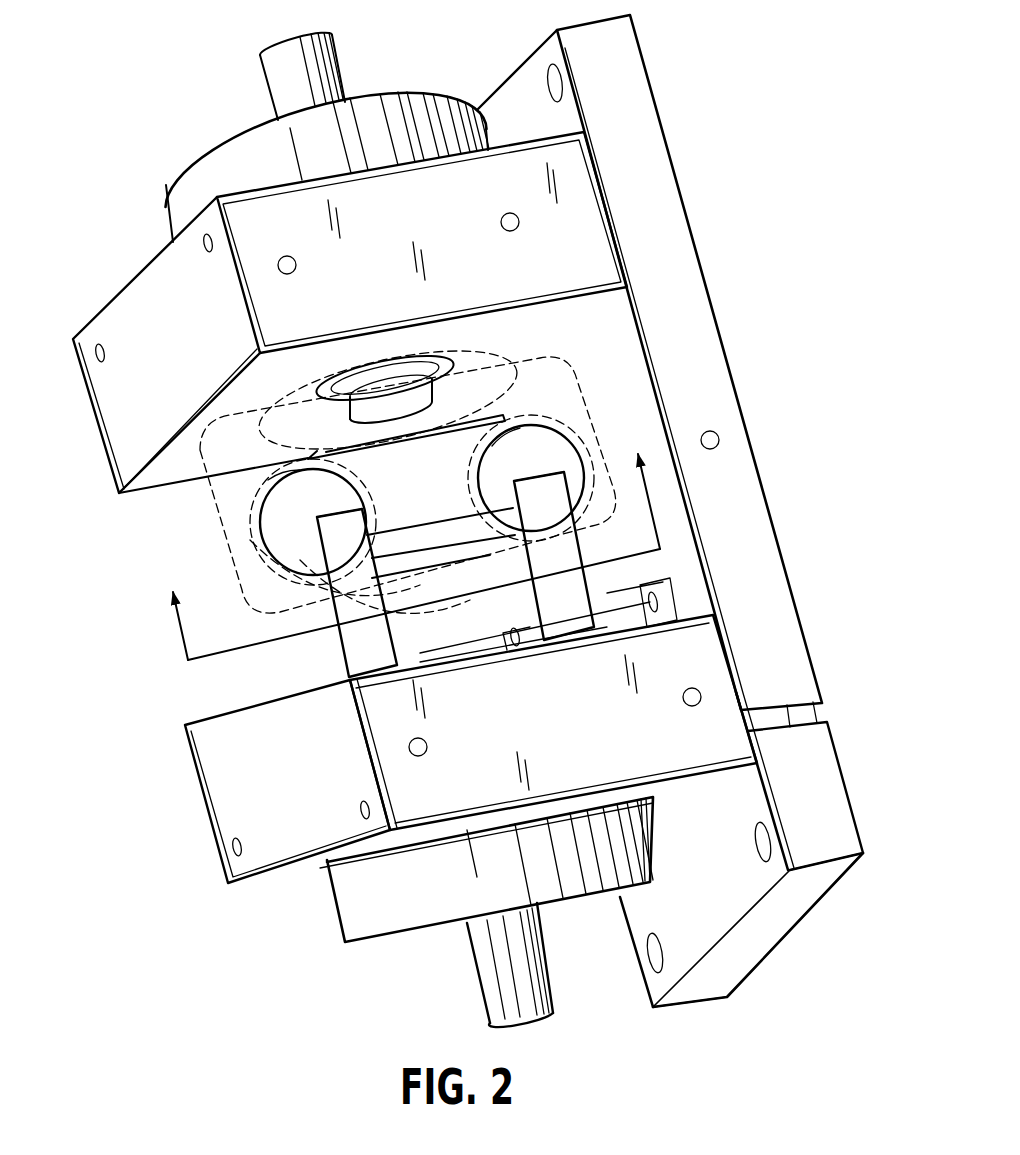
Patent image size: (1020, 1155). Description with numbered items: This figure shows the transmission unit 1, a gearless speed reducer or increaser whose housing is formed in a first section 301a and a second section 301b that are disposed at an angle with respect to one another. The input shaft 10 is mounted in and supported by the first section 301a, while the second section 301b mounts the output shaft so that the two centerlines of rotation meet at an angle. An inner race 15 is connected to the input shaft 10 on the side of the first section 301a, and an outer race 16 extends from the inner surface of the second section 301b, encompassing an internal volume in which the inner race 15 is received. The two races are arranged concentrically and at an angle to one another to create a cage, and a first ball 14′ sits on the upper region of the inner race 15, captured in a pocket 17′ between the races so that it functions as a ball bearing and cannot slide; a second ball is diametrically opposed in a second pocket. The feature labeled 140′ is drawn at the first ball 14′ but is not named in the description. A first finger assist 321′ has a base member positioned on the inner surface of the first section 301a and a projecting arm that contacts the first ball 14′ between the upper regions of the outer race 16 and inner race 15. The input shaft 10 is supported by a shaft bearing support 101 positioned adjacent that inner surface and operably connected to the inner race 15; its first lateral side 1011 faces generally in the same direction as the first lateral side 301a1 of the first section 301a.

The transmission unit 1 is at (148, 731).
The input shaft 10 is at (523, 1000).
The shaft bearing support 101 is at (533, 880).
The first lateral side 1011 is at (540, 836).
The first ball 14′ is at (267, 533).
The first mounting hole 140′ is at (314, 518).
The inner race 15 is at (433, 478).
The outer race 16 is at (642, 378).
The first pocket 17′ is at (293, 488).
The first section 301a is at (250, 817).
The first lateral side 301a1 is at (548, 739).
The second section 301b is at (269, 313).
The first finger assist 321′ is at (358, 590).